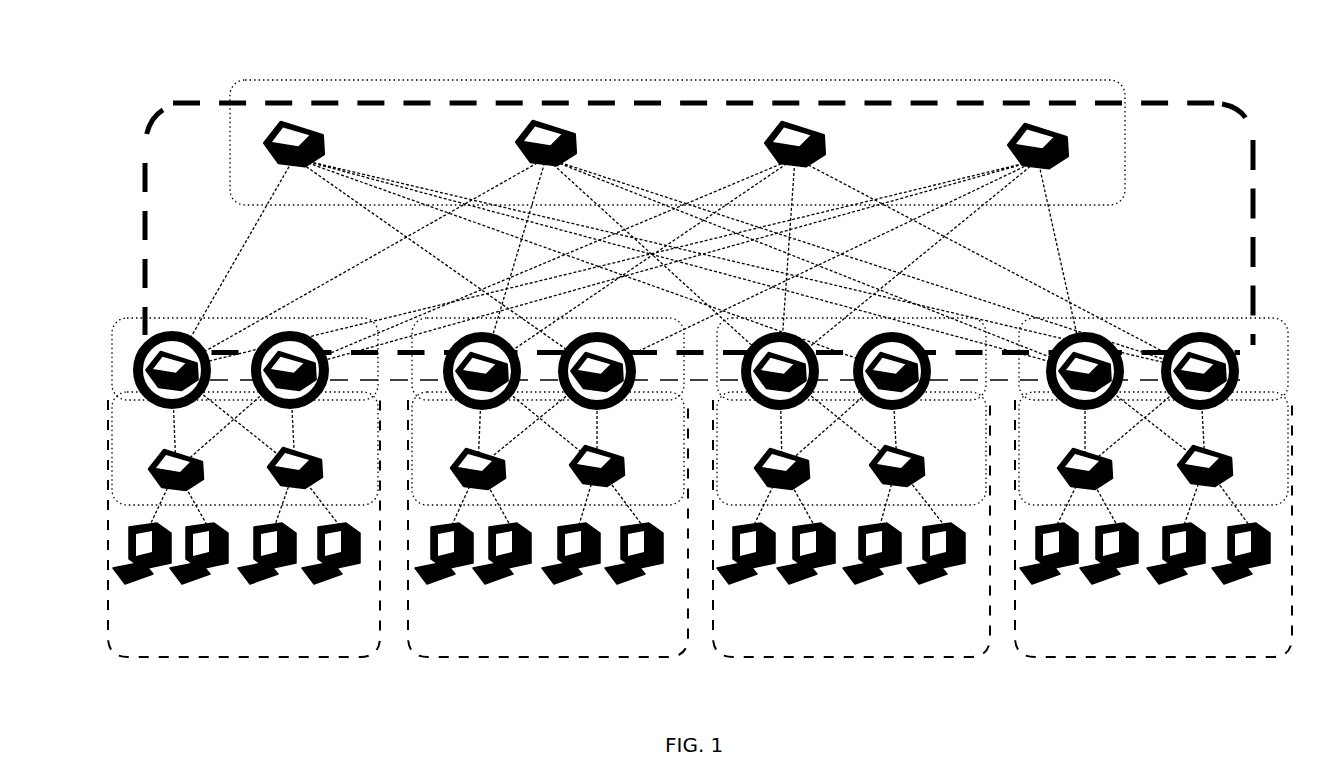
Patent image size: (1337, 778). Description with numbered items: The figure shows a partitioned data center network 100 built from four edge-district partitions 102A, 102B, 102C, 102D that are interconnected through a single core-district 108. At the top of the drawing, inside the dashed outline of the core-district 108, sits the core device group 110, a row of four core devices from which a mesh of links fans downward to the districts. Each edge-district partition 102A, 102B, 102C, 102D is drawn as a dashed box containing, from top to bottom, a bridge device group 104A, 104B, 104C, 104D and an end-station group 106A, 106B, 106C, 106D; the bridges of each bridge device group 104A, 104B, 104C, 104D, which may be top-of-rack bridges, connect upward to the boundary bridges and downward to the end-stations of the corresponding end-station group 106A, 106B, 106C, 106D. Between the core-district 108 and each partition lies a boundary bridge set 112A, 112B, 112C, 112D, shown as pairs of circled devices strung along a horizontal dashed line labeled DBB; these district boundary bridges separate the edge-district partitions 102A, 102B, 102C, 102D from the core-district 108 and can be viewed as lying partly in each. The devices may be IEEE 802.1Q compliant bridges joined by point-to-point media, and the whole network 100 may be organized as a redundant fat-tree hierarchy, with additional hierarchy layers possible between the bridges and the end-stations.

The partitioned data center network 100 is at (1293, 104).
The edge-district partition 102A is at (118, 656).
The edge-district partition 102B is at (418, 656).
The edge-district partition 102C is at (723, 656).
The edge-district partition 102D is at (1025, 656).
The bridge device group 104A is at (137, 437).
The bridge device group 104B is at (449, 437).
The bridge device group 104C is at (757, 437).
The bridge device group 104D is at (1057, 437).
The end-station group 106A is at (360, 597).
The end-station group 106B is at (660, 597).
The end-station group 106C is at (965, 597).
The end-station group 106D is at (1270, 597).
The core-district 108 is at (145, 226).
The core device group 110 is at (1075, 125).
The boundary bridge set 112A is at (137, 332).
The boundary bridge set 112B is at (449, 332).
The boundary bridge set 112C is at (754, 332).
The boundary bridge set 112D is at (1055, 332).